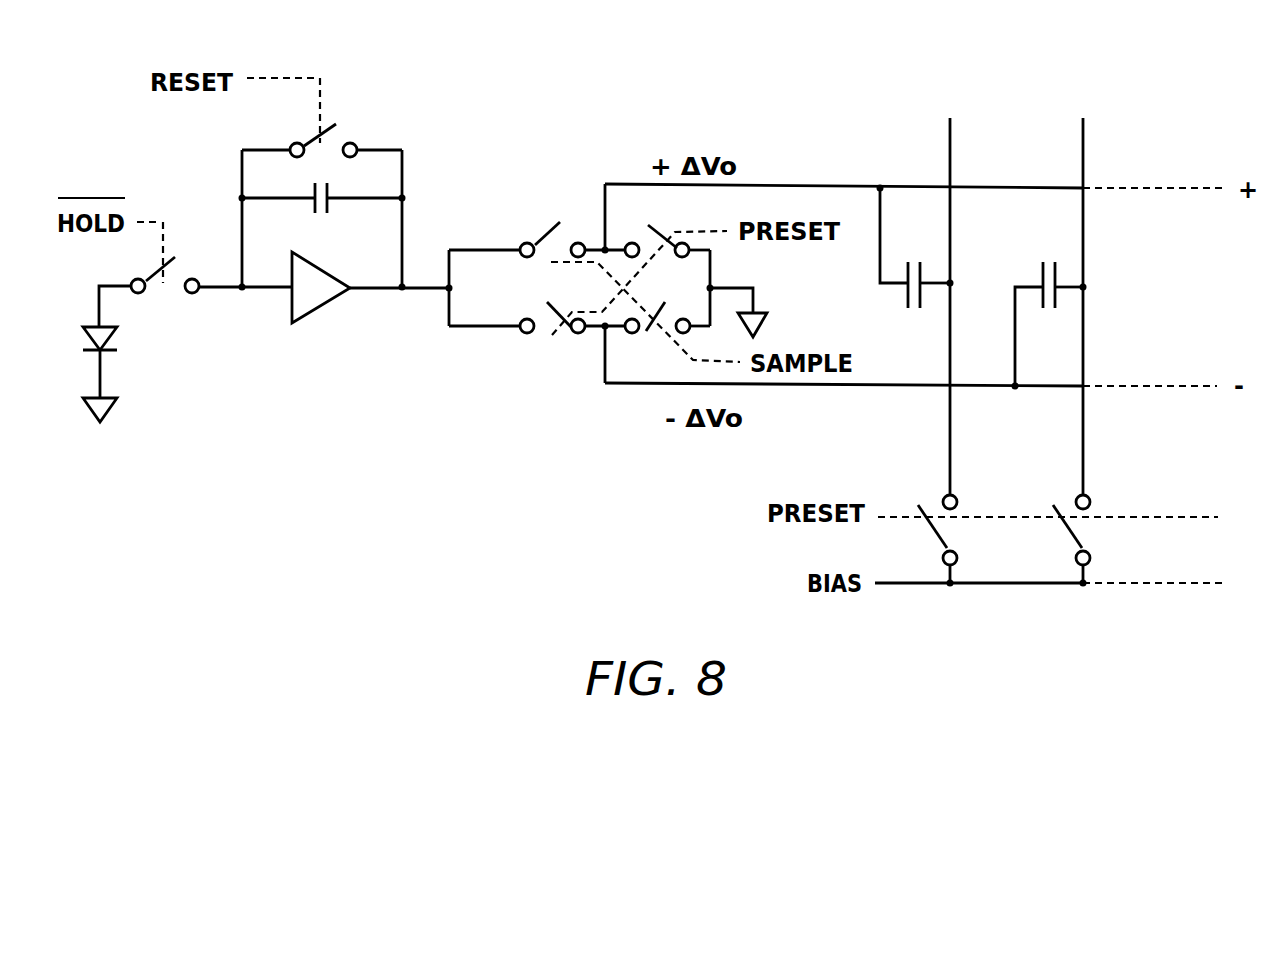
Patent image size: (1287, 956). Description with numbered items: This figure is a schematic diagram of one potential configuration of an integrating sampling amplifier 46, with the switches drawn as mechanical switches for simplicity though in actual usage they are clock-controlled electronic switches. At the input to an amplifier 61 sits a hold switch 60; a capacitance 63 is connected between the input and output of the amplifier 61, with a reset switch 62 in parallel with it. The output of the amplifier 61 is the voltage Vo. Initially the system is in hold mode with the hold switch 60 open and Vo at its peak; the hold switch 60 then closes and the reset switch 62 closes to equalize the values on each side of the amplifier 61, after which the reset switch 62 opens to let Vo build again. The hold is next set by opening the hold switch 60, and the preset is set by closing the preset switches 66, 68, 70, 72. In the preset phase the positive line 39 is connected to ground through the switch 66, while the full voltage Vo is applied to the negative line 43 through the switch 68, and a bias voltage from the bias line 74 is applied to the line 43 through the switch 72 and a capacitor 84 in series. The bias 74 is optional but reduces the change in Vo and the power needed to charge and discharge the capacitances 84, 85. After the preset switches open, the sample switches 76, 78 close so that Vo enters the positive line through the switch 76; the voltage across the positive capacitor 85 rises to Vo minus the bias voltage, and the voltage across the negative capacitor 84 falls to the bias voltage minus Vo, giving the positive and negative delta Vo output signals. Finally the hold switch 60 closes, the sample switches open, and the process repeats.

The positive line 39 is at (772, 187).
The negative line 43 is at (777, 384).
The integrating sampling amplifier 46 is at (300, 553).
The hold switch 60 is at (192, 260).
The amplifier 61 is at (317, 313).
The reset switch 62 is at (338, 139).
The capacitance 63 is at (328, 207).
The preset switch 66 is at (668, 226).
The preset switch 68 is at (540, 343).
The preset switch 70 is at (903, 508).
The preset switch 72 is at (1045, 508).
The bias line 74 is at (913, 584).
The sample switch 76 is at (573, 220).
The sample switch 78 is at (647, 334).
The negative capacitor 84 is at (1043, 280).
The positive capacitor 85 is at (907, 297).